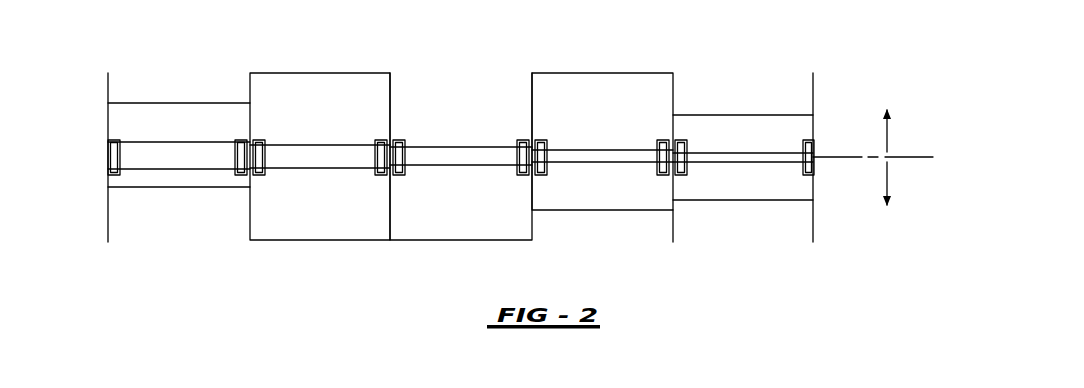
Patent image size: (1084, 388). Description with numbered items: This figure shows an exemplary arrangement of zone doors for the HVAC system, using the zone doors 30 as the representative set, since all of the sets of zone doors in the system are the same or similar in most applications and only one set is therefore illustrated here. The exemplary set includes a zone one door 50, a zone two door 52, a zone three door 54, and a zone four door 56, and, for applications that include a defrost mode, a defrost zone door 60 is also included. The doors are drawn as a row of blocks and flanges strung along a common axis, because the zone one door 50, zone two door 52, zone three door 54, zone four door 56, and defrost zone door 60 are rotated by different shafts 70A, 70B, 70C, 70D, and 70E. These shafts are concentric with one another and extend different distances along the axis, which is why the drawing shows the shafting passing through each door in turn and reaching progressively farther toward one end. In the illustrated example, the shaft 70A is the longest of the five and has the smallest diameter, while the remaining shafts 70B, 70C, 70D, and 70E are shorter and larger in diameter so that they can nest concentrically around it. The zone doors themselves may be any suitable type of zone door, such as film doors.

The zone doors 30 is at (178, 263).
The zone one door 50 is at (192, 103).
The zone two door 52 is at (758, 115).
The zone three door 54 is at (352, 73).
The zone four door 56 is at (603, 73).
The defrost zone door 60 is at (460, 240).
The shaft 70A is at (743, 158).
The shaft 70B is at (597, 157).
The shaft 70C is at (473, 157).
The shaft 70D is at (320, 157).
The shaft 70E is at (155, 157).